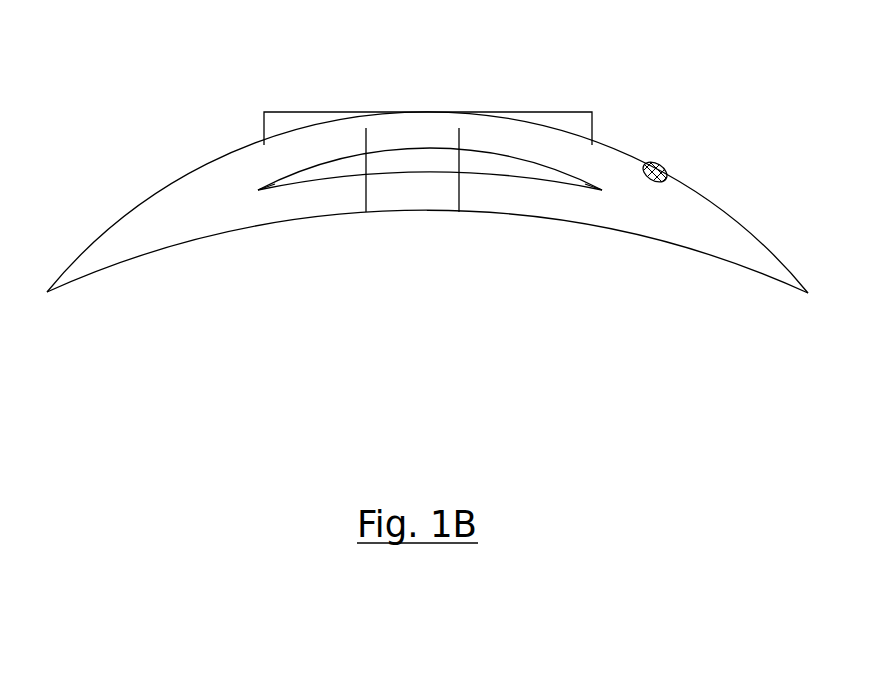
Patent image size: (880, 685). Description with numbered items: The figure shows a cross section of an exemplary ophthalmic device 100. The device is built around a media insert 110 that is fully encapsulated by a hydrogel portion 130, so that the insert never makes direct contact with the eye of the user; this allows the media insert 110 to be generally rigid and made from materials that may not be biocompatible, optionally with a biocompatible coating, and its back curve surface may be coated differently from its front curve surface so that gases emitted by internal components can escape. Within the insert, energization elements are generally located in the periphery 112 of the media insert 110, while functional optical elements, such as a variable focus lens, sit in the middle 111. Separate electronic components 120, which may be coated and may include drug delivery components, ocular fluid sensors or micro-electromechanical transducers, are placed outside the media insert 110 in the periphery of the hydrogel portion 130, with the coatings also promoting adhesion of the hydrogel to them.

The ophthalmic device 100 is at (159, 31).
The media insert 110 is at (428, 112).
The middle of the media insert 111 is at (427, 163).
The periphery of the media insert 112 is at (298, 181).
The electronic components 120 is at (658, 164).
The hydrogel portion 130 is at (187, 198).